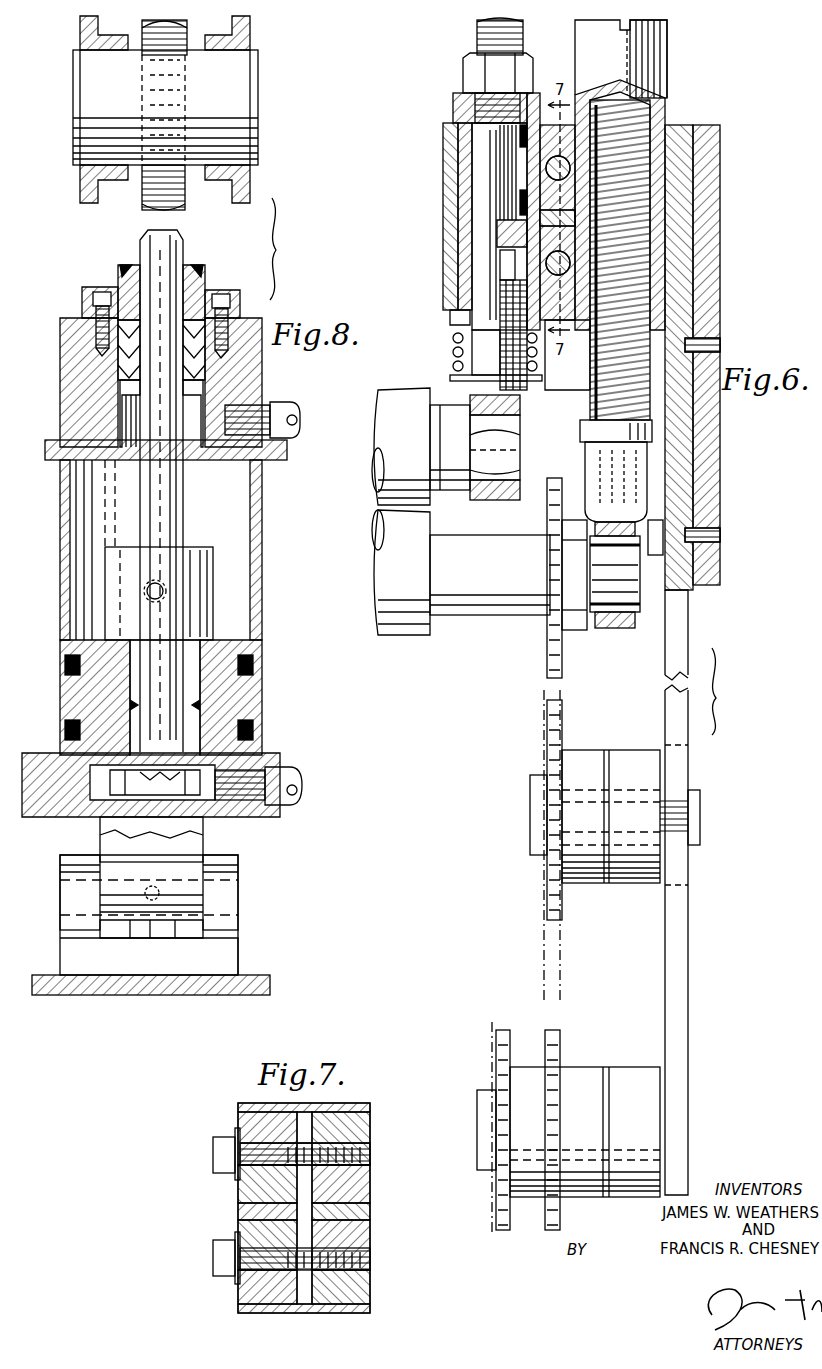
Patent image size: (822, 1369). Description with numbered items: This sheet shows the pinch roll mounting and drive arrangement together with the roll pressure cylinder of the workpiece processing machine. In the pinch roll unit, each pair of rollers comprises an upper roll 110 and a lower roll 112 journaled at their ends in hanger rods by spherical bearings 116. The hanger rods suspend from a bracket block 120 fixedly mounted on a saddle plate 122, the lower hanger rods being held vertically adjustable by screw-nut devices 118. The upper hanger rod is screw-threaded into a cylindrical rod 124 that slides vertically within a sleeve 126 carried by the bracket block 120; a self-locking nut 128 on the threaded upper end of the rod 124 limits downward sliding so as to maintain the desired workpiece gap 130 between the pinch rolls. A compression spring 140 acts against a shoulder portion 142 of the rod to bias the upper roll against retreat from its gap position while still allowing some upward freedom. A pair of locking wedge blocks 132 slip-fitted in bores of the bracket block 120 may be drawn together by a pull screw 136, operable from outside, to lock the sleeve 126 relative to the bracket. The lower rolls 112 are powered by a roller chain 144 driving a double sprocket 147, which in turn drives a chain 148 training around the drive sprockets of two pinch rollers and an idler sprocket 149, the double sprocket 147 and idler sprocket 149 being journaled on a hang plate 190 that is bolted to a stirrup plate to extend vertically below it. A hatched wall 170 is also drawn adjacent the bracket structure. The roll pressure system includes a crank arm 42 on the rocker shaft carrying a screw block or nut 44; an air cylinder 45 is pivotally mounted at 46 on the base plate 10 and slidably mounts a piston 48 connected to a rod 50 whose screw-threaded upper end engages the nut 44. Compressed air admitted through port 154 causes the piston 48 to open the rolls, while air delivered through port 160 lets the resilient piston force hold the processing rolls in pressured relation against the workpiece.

In FIG. 8, the base plate 10 is at (268, 985).
In FIG. 8, the crank arm 42 is at (250, 30).
In FIG. 8, the screw block or nut 44 is at (258, 92).
In FIG. 8, the air cylinder 45 is at (262, 565).
In FIG. 8, the pivotal mounting 46 is at (240, 895).
In FIG. 8, the piston 48 is at (235, 640).
In FIG. 8, the rod 50 is at (185, 200).
In FIG. 6, the upper roll 110 is at (425, 420).
In FIG. 6, the lower roll 112 is at (425, 556).
In FIG. 6, the spherical bearings 116 is at (520, 410).
In FIG. 6, the screw-nut devices 118 is at (667, 42).
In FIG. 7, the bracket block 120 is at (352, 1110).
In FIG. 6, the bracket block 120 is at (434, 181).
In FIG. 6, the saddle plate 122 is at (688, 607).
In FIG. 6, the cylindrical rod 124 is at (477, 30).
In FIG. 6, the sleeve 126 is at (453, 95).
In FIG. 6, the self-locking nut 128 is at (463, 65).
In FIG. 6, the workpiece gap 130 is at (366, 516).
In FIG. 7, the locking wedge blocks 132 is at (238, 1193).
In FIG. 7, the pull screw 136 is at (215, 1137).
In FIG. 6, the compression spring 140 is at (453, 352).
In FIG. 6, the shoulder portion 142 is at (453, 335).
In FIG. 6, the roller chain 144 is at (500, 1032).
In FIG. 6, the double sprocket 147 is at (625, 1067).
In FIG. 6, the chain 148 is at (560, 955).
In FIG. 6, the idler sprocket 149 is at (625, 750).
In FIG. 8, the port 154 is at (287, 400).
In FIG. 8, the port 160 is at (290, 767).
In FIG. 6, the wall 170 is at (720, 472).
In FIG. 6, the hang plate 190 is at (688, 752).